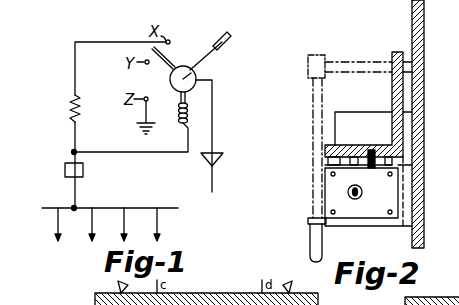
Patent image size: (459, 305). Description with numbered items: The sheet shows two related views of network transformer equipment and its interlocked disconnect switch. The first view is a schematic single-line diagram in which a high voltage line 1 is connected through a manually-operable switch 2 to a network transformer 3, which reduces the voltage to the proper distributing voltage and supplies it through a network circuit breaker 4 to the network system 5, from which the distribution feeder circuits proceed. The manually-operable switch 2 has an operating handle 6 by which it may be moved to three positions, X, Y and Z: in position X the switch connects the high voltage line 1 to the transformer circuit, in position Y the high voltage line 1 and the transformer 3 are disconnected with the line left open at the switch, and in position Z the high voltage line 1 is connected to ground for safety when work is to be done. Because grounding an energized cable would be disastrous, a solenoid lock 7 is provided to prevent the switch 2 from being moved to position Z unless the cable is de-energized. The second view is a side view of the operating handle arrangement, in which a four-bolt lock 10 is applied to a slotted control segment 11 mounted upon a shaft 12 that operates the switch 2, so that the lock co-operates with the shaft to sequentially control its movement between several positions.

In FIG. 1, the high voltage line 1 is at (215, 178).
In FIG. 2, the manually-operable switch 2 is at (372, 103).
In FIG. 1, the network transformer 3 is at (62, 111).
In FIG. 1, the network circuit breaker 4 is at (64, 170).
In FIG. 1, the network system 5 is at (47, 210).
In FIG. 2, the operating handle 6 is at (309, 239).
In FIG. 1, the solenoid lock 7 is at (188, 118).
In FIG. 2, the four-bolt lock 10 is at (333, 193).
In FIG. 2, the control segment 11 is at (337, 128).
In FIG. 2, the shaft 12 is at (370, 58).